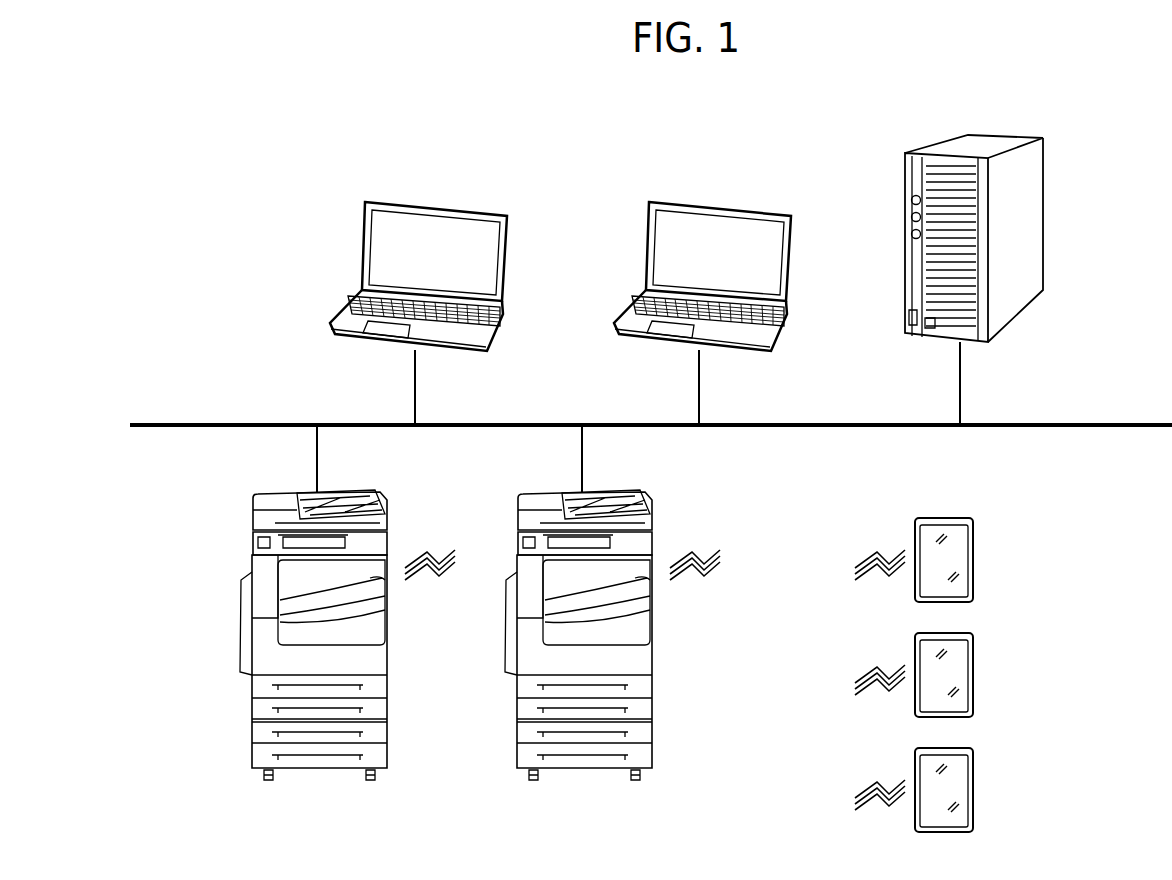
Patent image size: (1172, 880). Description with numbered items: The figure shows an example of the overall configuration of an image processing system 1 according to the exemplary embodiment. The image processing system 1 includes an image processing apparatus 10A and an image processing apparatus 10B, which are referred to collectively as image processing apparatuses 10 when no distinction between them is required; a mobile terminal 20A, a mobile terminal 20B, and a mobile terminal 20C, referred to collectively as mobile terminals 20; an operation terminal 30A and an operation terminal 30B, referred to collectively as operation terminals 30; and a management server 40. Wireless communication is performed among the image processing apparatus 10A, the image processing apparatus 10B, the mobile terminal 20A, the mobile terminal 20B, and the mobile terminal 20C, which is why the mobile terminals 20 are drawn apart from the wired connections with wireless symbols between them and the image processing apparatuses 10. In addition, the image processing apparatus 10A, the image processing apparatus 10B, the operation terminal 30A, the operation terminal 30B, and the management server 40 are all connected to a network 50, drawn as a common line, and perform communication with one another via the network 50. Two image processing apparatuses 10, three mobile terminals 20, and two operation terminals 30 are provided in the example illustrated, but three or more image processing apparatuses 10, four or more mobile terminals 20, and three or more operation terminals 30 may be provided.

The image processing system 1 is at (230, 135).
The image processing apparatuses 10 is at (583, 832).
The image processing apparatus 10A is at (348, 770).
The image processing apparatus 10B is at (613, 770).
The mobile terminals 20 is at (1072, 545).
The mobile terminal 20A is at (973, 558).
The mobile terminal 20B is at (973, 673).
The mobile terminal 20C is at (973, 788).
The operation terminals 30 is at (712, 136).
The operation terminal 30A is at (474, 201).
The operation terminal 30B is at (689, 201).
The management server 40 is at (1043, 215).
The network 50 is at (1147, 423).